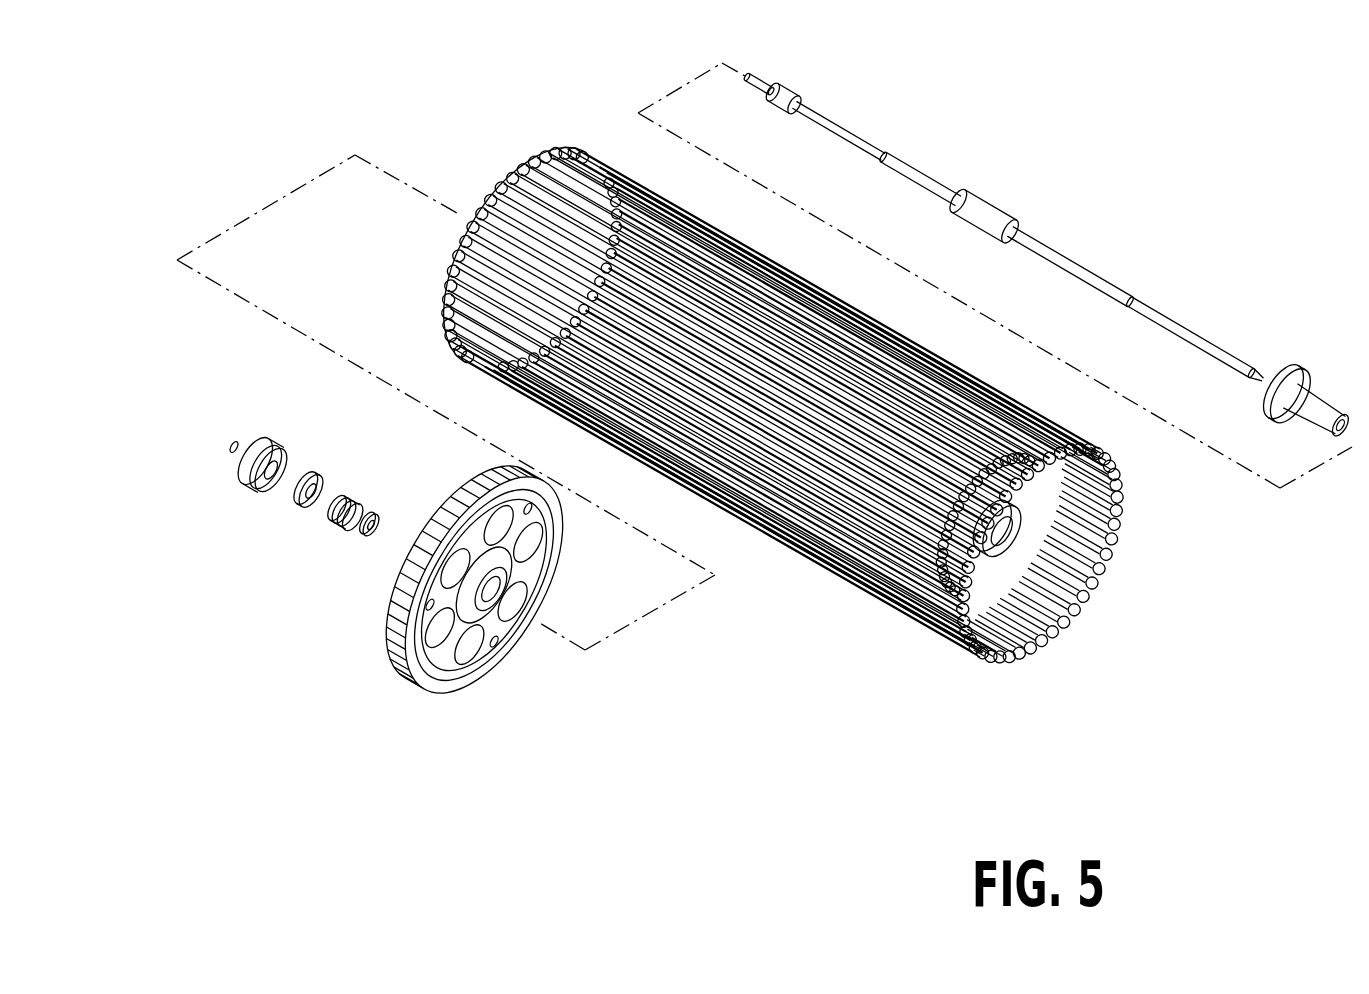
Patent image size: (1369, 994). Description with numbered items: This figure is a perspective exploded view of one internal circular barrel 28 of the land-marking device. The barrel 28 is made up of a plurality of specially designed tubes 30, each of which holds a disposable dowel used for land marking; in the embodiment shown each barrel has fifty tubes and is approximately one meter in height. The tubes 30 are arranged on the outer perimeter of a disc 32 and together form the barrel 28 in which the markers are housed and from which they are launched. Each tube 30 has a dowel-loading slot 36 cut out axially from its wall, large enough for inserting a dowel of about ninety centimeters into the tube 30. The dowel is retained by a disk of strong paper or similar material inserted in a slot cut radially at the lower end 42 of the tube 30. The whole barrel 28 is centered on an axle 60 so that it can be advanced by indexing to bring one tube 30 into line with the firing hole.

The internal circular barrel 28 is at (897, 610).
The tube 30 is at (977, 663).
The disc 32 is at (1117, 540).
The dowel-loading slot 36 is at (900, 550).
The lower end 42 is at (1077, 447).
The axle 60 is at (858, 140).